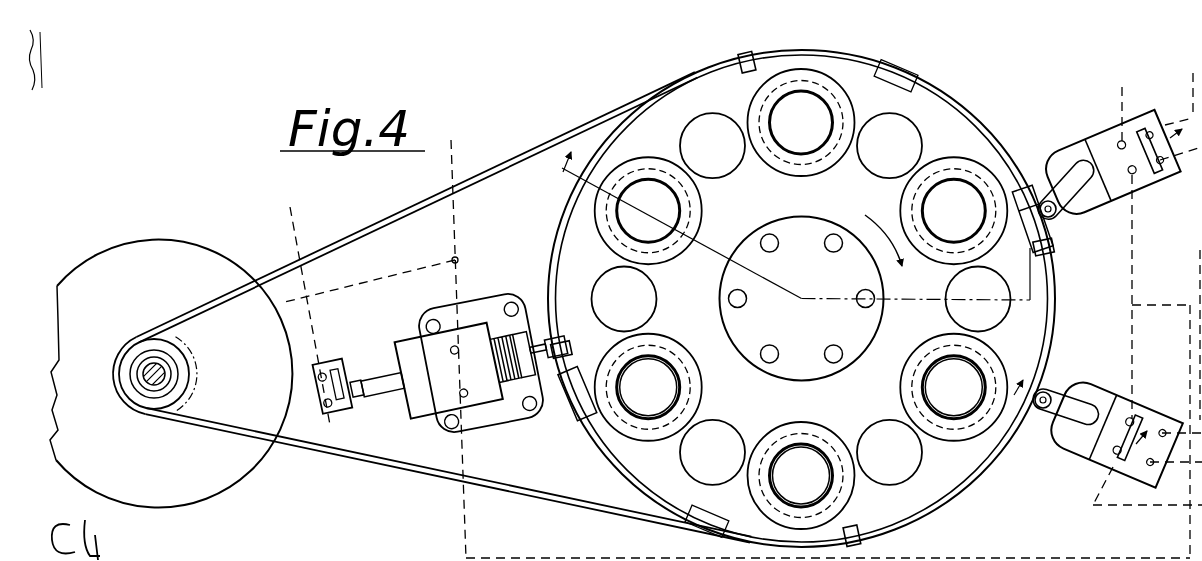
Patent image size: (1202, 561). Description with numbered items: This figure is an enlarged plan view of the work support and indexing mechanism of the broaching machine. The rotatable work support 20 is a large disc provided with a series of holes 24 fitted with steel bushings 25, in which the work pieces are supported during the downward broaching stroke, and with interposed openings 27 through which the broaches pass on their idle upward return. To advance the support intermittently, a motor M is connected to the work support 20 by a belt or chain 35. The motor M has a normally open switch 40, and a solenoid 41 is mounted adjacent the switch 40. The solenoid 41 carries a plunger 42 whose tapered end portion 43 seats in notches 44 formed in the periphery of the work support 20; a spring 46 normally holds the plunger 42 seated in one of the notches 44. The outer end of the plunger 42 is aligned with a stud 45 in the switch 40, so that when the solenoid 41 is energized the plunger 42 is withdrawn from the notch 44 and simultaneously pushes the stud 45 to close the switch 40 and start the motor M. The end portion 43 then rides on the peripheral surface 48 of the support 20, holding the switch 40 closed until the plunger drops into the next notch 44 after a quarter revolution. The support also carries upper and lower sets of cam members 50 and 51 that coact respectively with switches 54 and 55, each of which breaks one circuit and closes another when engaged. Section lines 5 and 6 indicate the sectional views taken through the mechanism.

The motor M is at (235, 249).
The work support 20 is at (945, 488).
The holes 24 is at (801, 431).
The steel bushings 25 is at (646, 175).
The interposed openings 27 is at (720, 165).
The belt or chain 35 is at (404, 470).
The switch 40 is at (328, 362).
The solenoid 41 is at (445, 394).
The plunger 42 is at (388, 392).
The tapered end portion 43 is at (558, 346).
The notches 44 is at (767, 50).
The stud 45 is at (352, 385).
The spring 46 is at (512, 390).
The peripheral surface 48 is at (565, 432).
The cam members 50 is at (1025, 200).
The cam members 51 is at (882, 82).
The switch 54 is at (1100, 140).
The switch 55 is at (1118, 398).
The section line 5- 5 is at (873, 211).
The section line 6- 6 is at (1076, 420).